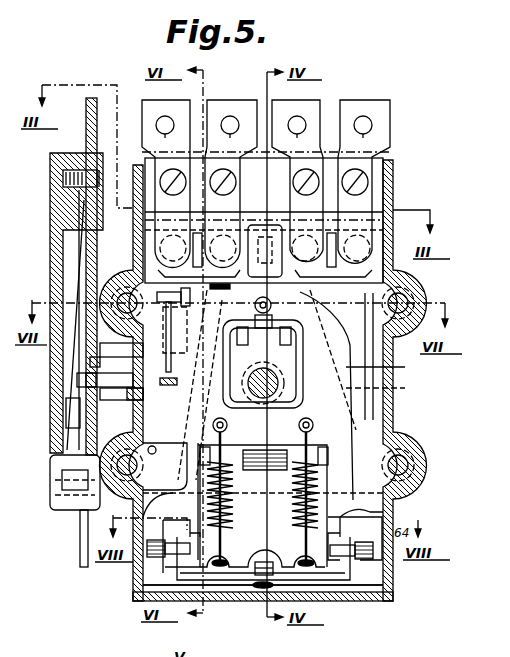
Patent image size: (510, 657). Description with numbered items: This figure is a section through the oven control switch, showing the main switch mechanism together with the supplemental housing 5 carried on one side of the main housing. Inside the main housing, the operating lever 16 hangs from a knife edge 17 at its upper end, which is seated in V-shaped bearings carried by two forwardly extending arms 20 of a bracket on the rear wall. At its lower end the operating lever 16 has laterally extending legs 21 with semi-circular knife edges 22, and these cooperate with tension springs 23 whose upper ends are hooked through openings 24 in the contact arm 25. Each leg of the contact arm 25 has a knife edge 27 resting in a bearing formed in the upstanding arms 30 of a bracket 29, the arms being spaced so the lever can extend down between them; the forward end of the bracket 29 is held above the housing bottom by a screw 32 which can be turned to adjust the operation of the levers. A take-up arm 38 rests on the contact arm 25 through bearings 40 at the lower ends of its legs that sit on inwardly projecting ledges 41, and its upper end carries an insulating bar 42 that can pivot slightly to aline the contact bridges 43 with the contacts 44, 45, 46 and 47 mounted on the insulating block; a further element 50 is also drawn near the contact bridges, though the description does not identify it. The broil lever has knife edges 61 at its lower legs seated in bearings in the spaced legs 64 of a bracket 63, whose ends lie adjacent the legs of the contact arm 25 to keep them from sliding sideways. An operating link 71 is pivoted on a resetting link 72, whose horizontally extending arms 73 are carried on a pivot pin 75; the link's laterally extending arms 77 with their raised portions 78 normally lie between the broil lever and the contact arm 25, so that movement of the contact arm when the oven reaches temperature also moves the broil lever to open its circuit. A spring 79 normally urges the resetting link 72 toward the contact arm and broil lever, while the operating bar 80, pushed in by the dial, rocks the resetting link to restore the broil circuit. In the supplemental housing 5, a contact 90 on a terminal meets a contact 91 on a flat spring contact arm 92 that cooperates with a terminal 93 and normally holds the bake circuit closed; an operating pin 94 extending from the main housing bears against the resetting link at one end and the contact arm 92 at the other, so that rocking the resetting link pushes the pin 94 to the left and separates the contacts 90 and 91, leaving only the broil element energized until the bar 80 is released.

The supplemental housing 5 is at (50, 234).
The operating lever 16 is at (396, 503).
The knife edge 17 is at (263, 364).
The arms 20 is at (194, 333).
The laterally extending legs 21 is at (231, 550).
The semi-circular knife edges 22 is at (214, 592).
The tension springs 23 is at (224, 462).
The openings 24 is at (228, 424).
The contact arm 25 is at (386, 367).
The knife edge 27 is at (145, 601).
The bracket 29 is at (212, 581).
The upstanding arms 30 is at (160, 563).
The screw 32 is at (250, 601).
The take-up arm 38 is at (386, 389).
The bearings 40 is at (200, 456).
The ledges 41 is at (314, 424).
The insulating bar 42 is at (336, 218).
The contact bridges 43 is at (134, 265).
The contact 44 is at (149, 106).
The contact 45 is at (226, 99).
The contact 46 is at (289, 99).
The contact 47 is at (364, 99).
The contact 50 is at (273, 306).
The knife edges 61 is at (175, 580).
The bracket 63 is at (371, 512).
The legs 64 is at (147, 547).
The operating link 71 is at (162, 319).
The resetting link 72 is at (196, 436).
The horizontally extending arms 73 is at (465, 648).
The pivot pin 75 is at (153, 455).
The arms 77 is at (176, 300).
The raised portion 78 is at (171, 320).
The spring 79 is at (128, 399).
The operating bar 80 is at (177, 382).
The contact 90 is at (58, 434).
The contact 91 is at (66, 406).
The contact arm 92 is at (70, 266).
The terminal 93 is at (86, 140).
The operating pin 94 is at (128, 370).